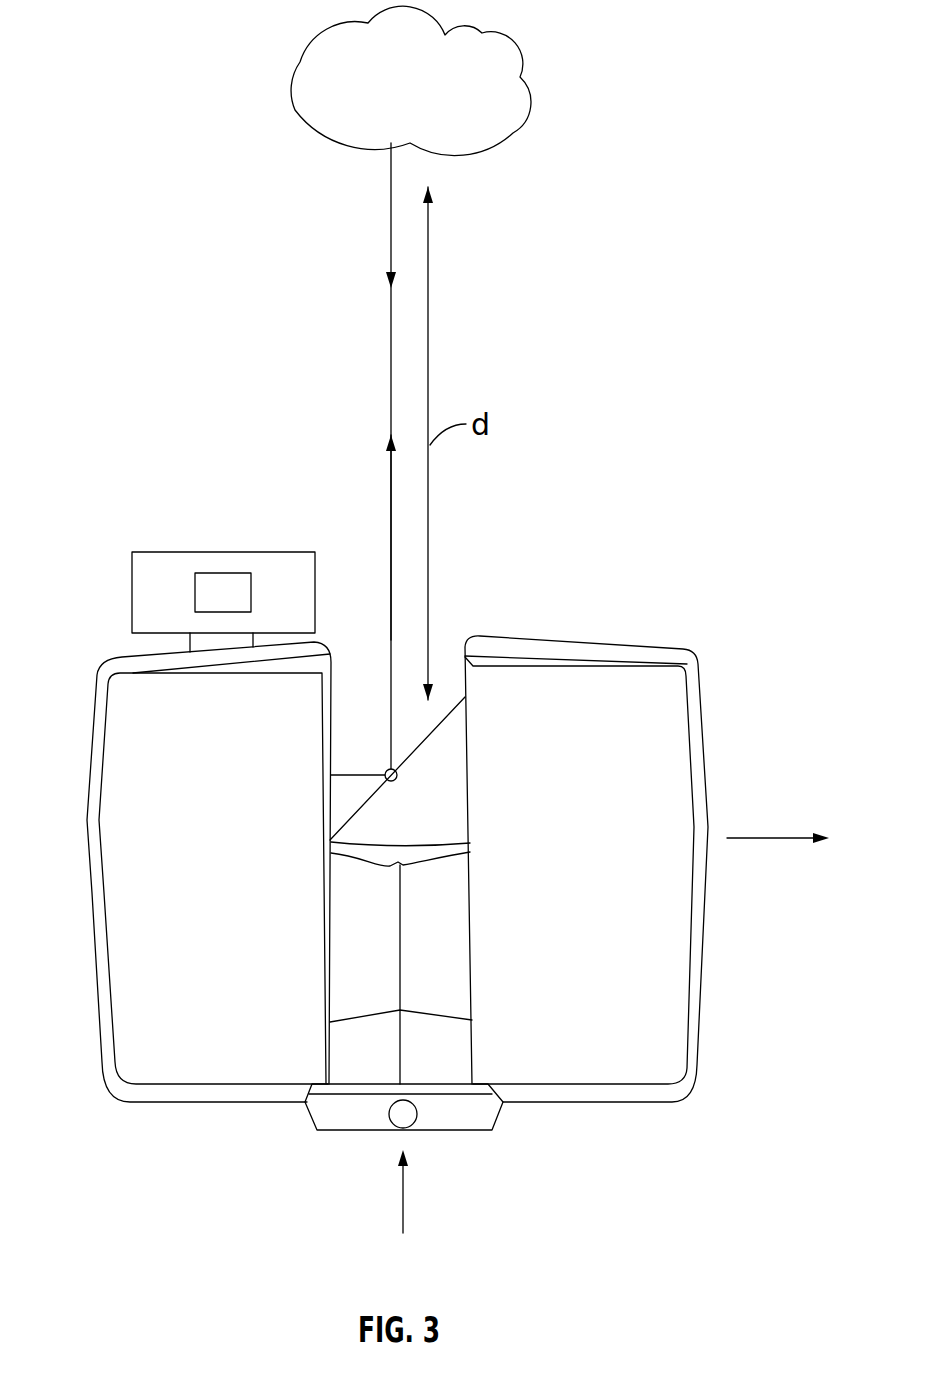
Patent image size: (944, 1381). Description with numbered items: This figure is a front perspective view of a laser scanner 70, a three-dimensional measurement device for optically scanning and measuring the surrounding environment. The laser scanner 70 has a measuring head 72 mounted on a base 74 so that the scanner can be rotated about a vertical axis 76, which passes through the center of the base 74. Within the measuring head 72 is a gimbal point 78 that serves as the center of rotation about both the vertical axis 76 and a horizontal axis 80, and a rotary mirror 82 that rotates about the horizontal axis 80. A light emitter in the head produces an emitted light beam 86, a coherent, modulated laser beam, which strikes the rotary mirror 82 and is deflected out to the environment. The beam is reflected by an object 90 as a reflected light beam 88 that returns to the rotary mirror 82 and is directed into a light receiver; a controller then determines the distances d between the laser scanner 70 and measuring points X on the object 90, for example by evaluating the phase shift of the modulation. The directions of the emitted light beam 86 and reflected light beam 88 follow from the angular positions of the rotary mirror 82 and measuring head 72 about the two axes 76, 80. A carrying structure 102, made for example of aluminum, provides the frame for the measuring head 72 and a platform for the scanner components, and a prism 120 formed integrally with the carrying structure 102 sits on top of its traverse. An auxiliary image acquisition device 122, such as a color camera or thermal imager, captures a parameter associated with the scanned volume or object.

The laser scanner 70 is at (242, 252).
The measuring head 72 is at (601, 575).
The base 74 is at (311, 1118).
The vertical axis 76 is at (405, 1195).
The gimbal point 78 is at (405, 773).
The horizontal axis 80 is at (778, 838).
The rotary mirror 82 is at (372, 797).
The emitted light beam 86 is at (390, 476).
The reflected light beam 88 is at (390, 258).
The object 90 is at (483, 33).
The carrying structure 102 is at (485, 1147).
The prism 120 is at (408, 865).
The auxiliary image acquisition device 122 is at (155, 597).